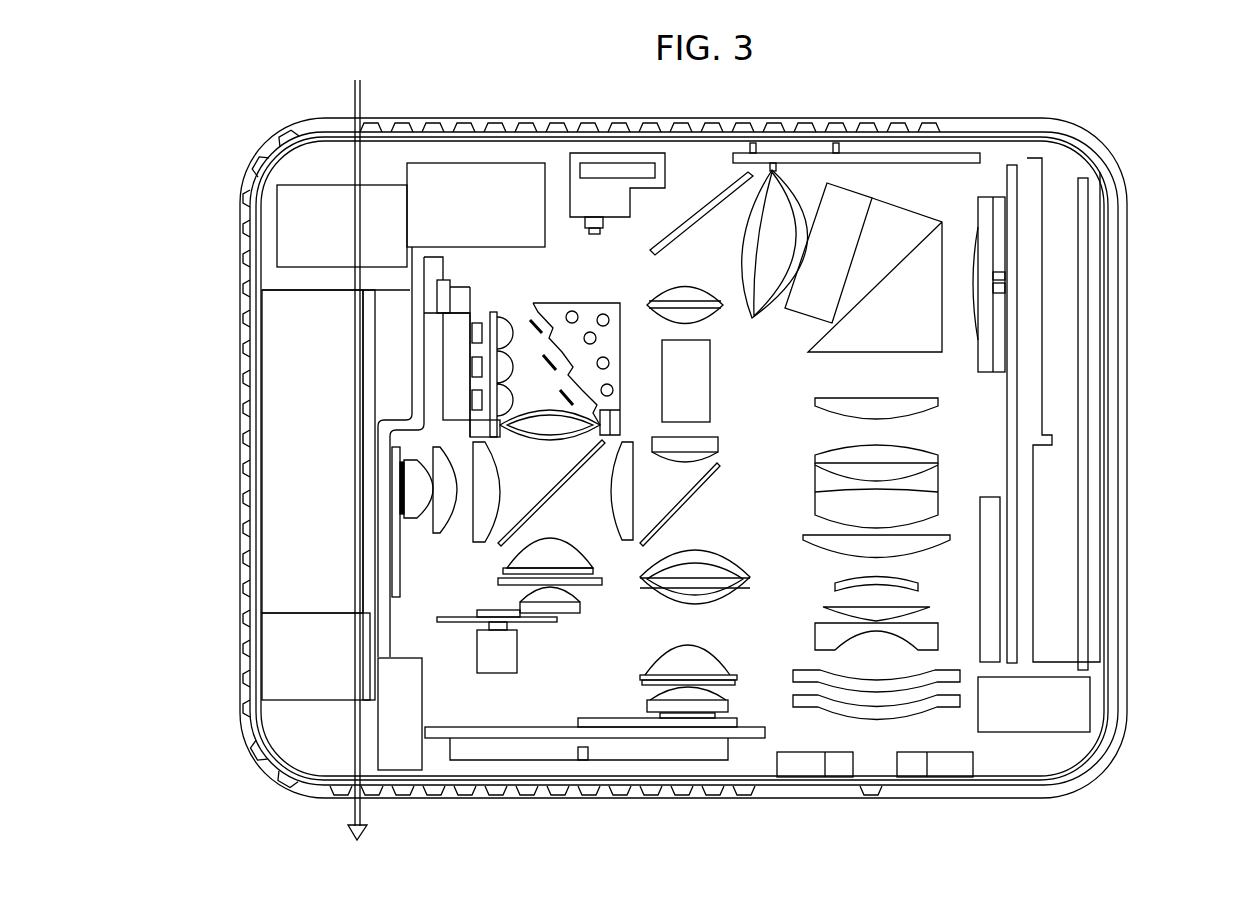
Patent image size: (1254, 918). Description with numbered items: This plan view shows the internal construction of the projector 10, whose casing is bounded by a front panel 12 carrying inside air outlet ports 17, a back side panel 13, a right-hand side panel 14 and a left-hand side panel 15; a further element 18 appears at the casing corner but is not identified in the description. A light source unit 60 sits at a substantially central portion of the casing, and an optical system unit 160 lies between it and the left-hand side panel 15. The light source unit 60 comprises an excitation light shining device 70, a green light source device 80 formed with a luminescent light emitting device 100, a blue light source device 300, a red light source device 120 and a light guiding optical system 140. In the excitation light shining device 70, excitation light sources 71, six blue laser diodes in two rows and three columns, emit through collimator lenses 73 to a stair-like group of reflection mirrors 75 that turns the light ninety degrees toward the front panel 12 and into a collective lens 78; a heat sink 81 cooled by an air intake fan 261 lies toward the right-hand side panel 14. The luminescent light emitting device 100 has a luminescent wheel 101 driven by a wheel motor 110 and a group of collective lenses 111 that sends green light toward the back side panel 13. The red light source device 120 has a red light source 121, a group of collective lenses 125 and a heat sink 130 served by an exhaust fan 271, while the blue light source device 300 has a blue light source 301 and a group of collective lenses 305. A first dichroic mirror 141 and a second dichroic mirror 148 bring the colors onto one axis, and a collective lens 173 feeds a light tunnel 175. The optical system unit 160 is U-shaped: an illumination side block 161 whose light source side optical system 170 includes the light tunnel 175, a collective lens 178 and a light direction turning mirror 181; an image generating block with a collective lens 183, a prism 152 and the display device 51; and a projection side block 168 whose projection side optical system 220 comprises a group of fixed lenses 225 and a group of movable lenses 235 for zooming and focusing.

The projector 10 is at (1137, 138).
The front panel 12 is at (580, 783).
The back side panel 13 is at (570, 133).
The right-hand side panel 14 is at (258, 645).
The left-hand side panel 15 is at (1112, 625).
The inside air outlet ports 17 is at (330, 782).
The corner portion 18 is at (273, 163).
The display device 51 is at (975, 272).
The light source unit 60 is at (399, 469).
The excitation light shining device 70 is at (450, 330).
The excitation light sources 71 is at (477, 330).
The collimator lenses 73 is at (497, 313).
The group of reflection mirrors 75 is at (523, 317).
The collective lens 78 is at (497, 423).
The green light source device 80 is at (415, 472).
The heat sink 81 is at (317, 360).
The luminescent light emitting device 100 is at (461, 735).
The luminescent wheel 101 is at (440, 627).
The wheel motor 110 is at (502, 652).
The group of collective lenses 111 is at (587, 600).
The red light source device 120 is at (398, 501).
The red light source 121 is at (400, 487).
The group of collective lenses 125 is at (428, 526).
The heat sink 130 is at (303, 480).
The light guiding optical system 140 is at (980, 619).
The first dichroic mirror 141 is at (570, 473).
The second dichroic mirror 148 is at (690, 493).
The prism 152 is at (930, 267).
The optical system unit 160 is at (837, 727).
The illumination side block 161 is at (755, 314).
The projection side block 168 is at (952, 463).
The light source side optical system 170 is at (910, 217).
The collective lens 173 is at (690, 447).
The light tunnel 175 is at (690, 393).
The collective lens 178 is at (697, 315).
The light direction turning mirror 181 is at (690, 210).
The collective lens 183 is at (783, 210).
The projection side optical system 220 is at (952, 490).
The group of fixed lenses 225 is at (903, 755).
The group of movable lenses 235 is at (952, 442).
The air intake fan 261 is at (317, 227).
The exhaust fan 271 is at (290, 663).
The blue light source device 300 is at (688, 732).
The blue light source 301 is at (682, 718).
The group of collective lenses 305 is at (725, 652).